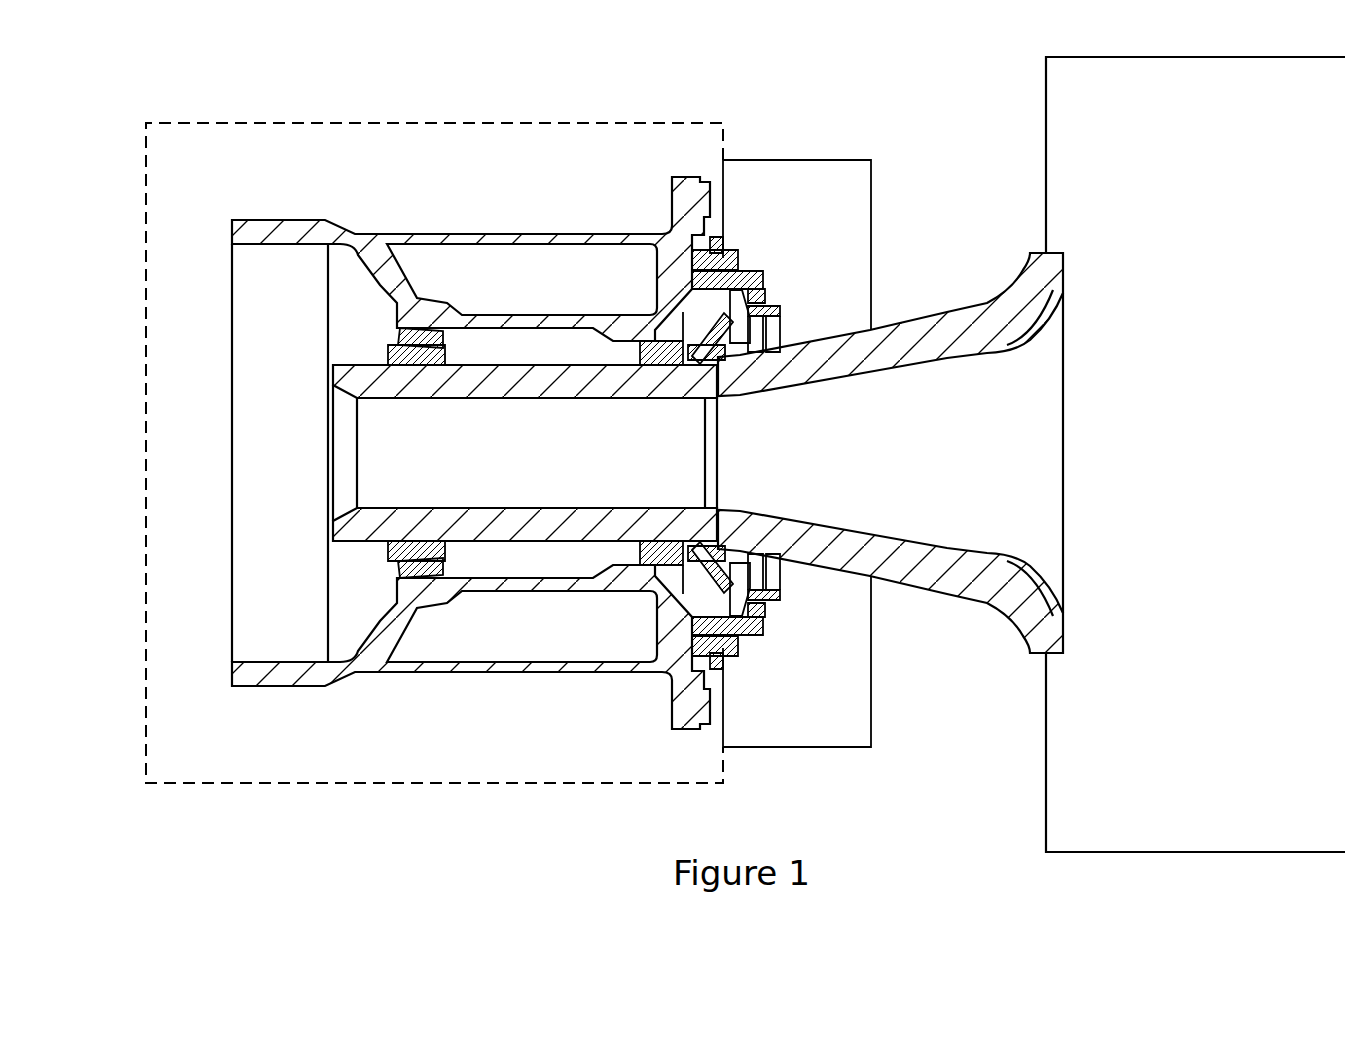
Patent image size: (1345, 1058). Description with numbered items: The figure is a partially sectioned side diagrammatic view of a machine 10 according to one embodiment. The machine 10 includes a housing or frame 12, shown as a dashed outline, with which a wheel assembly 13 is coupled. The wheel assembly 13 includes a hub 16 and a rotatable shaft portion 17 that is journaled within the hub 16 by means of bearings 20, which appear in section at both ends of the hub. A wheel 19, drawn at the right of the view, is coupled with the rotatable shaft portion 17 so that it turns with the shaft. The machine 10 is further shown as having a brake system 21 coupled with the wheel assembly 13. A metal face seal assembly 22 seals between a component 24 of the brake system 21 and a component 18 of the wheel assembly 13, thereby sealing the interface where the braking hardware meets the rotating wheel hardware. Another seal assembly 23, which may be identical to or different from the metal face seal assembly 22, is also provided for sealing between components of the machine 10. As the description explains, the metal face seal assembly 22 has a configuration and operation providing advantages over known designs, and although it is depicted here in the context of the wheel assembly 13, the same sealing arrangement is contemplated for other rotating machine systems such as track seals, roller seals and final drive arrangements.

The machine 10 is at (112, 289).
The housing or frame 12 is at (146, 572).
The wheel assembly 13 is at (182, 423).
The hub 16 is at (255, 681).
The rotatable shaft portion 17 is at (1063, 261).
The component of wheel assembly 18 is at (835, 170).
The wheel 19 is at (1056, 75).
The bearings 20 is at (412, 367).
The brake system 21 is at (897, 268).
The metal face seal assembly 22 is at (694, 283).
The seal assembly 23 is at (782, 316).
The component of brake system 24 is at (712, 240).